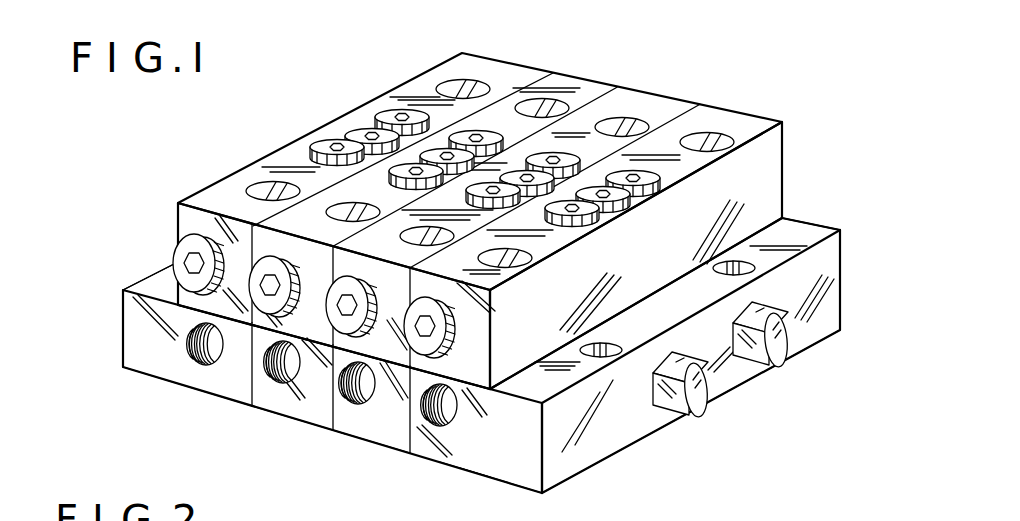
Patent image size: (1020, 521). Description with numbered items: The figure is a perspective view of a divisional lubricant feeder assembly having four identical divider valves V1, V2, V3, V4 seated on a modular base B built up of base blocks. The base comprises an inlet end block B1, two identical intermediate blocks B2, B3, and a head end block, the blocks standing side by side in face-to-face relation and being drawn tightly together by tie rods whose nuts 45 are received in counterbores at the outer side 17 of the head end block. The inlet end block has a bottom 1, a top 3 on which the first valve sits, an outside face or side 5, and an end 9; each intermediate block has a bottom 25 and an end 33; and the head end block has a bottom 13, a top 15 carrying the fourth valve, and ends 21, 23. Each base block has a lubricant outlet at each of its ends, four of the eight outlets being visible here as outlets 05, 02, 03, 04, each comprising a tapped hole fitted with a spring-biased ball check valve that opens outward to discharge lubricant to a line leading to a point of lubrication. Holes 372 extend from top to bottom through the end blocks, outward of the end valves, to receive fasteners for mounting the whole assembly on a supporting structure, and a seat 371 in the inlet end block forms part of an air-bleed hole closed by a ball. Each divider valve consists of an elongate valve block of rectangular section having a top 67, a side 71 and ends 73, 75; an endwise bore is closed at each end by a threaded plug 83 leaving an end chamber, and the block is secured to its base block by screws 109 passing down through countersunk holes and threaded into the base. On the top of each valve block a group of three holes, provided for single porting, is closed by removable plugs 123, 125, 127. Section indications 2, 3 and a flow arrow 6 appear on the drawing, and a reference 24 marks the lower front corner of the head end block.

The bottom 1 is at (185, 385).
The top 3 is at (147, 285).
The side 5 is at (123, 322).
The end 9 is at (240, 382).
The base B is at (103, 376).
The inlet end block B1 is at (148, 391).
The intermediate block B2 is at (306, 442).
The intermediate block B3 is at (385, 462).
The lubricant outlet 05 is at (190, 343).
The lubricant outlet 02 is at (271, 380).
The lubricant outlet 03 is at (358, 400).
The lubricant outlet 04 is at (452, 421).
The end 33 is at (282, 404).
The bottom 25 is at (340, 438).
The end 21 is at (463, 452).
The bottom 13 is at (478, 465).
The front bottom corner 24 is at (503, 497).
The side 17 is at (572, 460).
The end 23 is at (843, 276).
The top 15 is at (796, 236).
The seat 371 is at (604, 343).
The holes 372 is at (757, 272).
The nuts 45 is at (696, 403).
The section line 2- 2 is at (693, 433).
The end 73 is at (192, 215).
The end 75 is at (466, 54).
The side 71 is at (768, 172).
The divider valve V1 is at (490, 46).
The divider valve V2 is at (586, 70).
The divider valve V3 is at (665, 90).
The divider valve V4 is at (737, 98).
The top 67 is at (312, 149).
The flow direction arrows 6 is at (512, 40).
The screws 109 is at (455, 81).
The plug 127 is at (375, 110).
The plug 123 is at (352, 130).
The plug 125 is at (285, 157).
The plug 83 is at (178, 252).